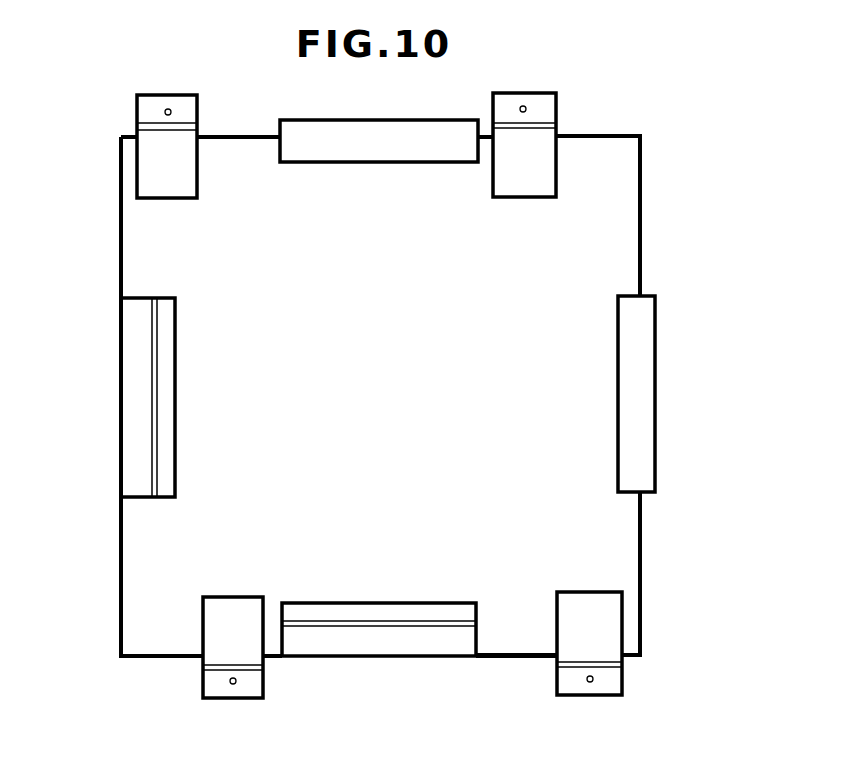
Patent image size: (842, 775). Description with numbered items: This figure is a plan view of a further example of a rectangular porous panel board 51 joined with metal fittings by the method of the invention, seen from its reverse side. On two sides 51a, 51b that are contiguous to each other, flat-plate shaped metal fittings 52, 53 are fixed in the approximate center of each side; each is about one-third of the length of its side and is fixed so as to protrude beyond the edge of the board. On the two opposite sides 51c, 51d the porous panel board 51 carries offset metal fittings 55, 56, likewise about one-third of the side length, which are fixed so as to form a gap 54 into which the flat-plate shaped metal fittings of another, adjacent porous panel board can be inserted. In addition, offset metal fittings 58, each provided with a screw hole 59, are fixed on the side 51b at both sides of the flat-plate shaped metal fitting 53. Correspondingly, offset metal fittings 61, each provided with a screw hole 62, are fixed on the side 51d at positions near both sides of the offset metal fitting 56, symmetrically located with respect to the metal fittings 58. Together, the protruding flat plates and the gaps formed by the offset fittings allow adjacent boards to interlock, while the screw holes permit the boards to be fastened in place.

The porous panel board 51 is at (608, 253).
The side of porous panel board 51a is at (642, 283).
The side of porous panel board 51b is at (620, 134).
The side of porous panel board 51c is at (121, 557).
The side of porous panel board 51d is at (520, 657).
The flat-plate shaped metal fitting 52 is at (642, 402).
The flat-plate shaped metal fitting 53 is at (441, 135).
The gap 54 is at (140, 310).
The offset metal fitting 55 is at (140, 406).
The offset metal fitting 56 is at (400, 638).
The offset metal fitting 58 is at (162, 156).
The screw hole 59 is at (171, 112).
The offset metal fitting 61 is at (228, 624).
The screw hole 62 is at (236, 681).